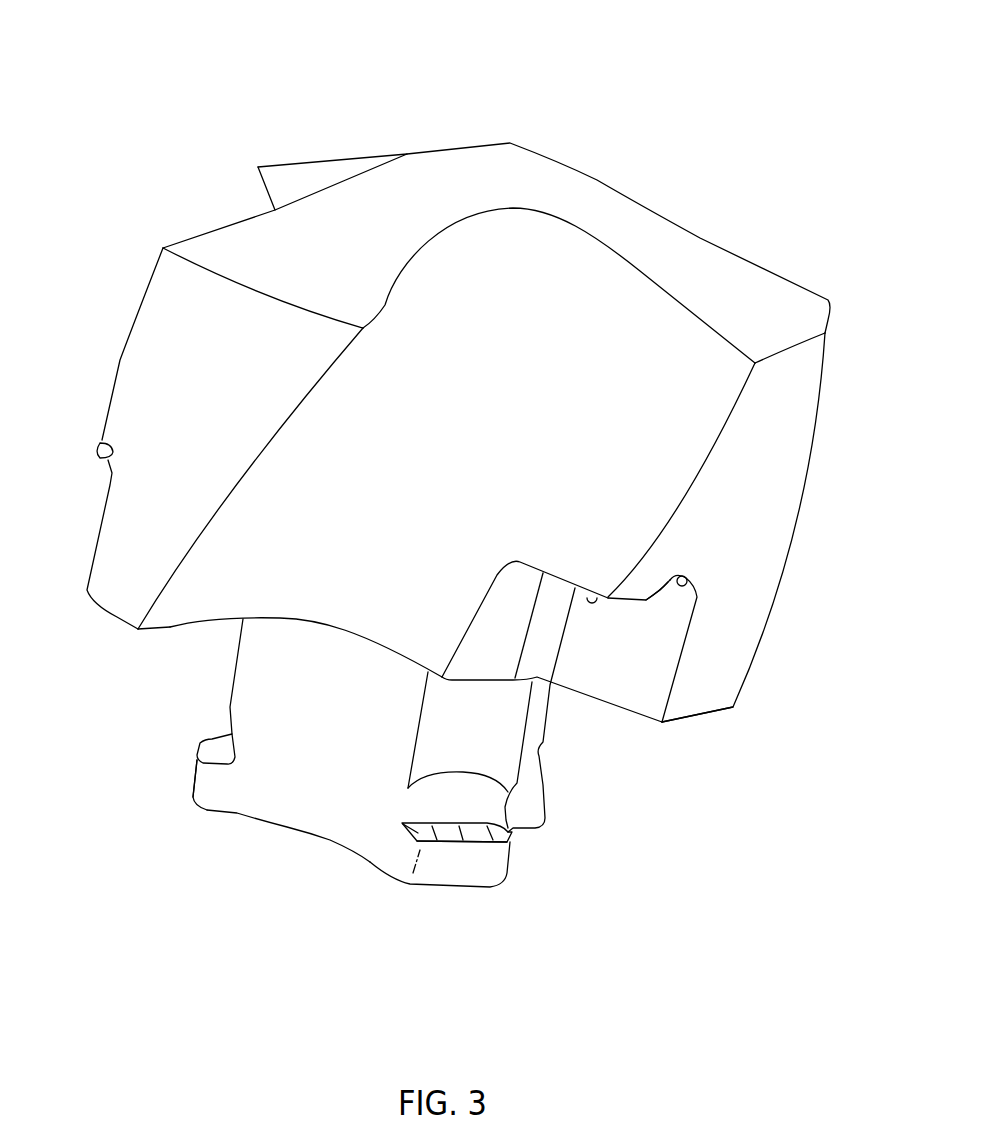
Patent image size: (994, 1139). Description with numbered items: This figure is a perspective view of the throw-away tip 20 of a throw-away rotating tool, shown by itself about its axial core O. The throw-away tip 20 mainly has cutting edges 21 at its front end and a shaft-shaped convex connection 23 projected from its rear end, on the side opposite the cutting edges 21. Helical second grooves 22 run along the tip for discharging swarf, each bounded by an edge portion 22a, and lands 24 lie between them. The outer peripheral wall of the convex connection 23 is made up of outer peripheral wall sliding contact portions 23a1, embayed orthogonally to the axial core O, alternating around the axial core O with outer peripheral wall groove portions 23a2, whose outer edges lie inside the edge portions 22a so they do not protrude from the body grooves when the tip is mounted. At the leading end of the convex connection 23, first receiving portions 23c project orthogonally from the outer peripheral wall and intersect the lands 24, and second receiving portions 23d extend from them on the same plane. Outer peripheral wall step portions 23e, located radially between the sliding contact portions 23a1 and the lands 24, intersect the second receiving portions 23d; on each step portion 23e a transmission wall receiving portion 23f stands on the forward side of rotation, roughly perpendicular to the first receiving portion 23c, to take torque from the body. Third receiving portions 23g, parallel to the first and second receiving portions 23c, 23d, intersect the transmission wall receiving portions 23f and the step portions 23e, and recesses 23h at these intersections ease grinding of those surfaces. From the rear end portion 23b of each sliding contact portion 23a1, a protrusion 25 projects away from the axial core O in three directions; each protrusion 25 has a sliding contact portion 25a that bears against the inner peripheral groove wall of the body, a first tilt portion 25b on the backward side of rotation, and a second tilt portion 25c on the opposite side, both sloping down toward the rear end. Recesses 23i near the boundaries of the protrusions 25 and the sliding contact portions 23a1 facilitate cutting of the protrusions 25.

The throw-away tip 20 is at (717, 85).
The cutting edges 21 is at (428, 242).
The second groove 22 is at (310, 410).
The edge portion 22a is at (178, 631).
The shaft-shaped convex connection 23 is at (240, 935).
The outer peripheral wall sliding contact portion 23a1 is at (502, 762).
The outer peripheral wall groove portion 23a2 is at (234, 793).
The rear end portion 23b is at (288, 828).
The first receiving portion 23c is at (690, 723).
The second receiving portion 23d is at (475, 683).
The outer peripheral wall step portion 23e is at (494, 605).
The transmission wall receiving portion 23f is at (613, 693).
The third receiving portion 23g is at (593, 588).
The recess 23h is at (690, 579).
The recess 23i is at (408, 800).
The land 24 is at (152, 297).
The protrusion 25 is at (487, 873).
The sliding contact portion 25a is at (458, 835).
The first tilt portion 25b is at (507, 840).
The second tilt portion 25c is at (403, 826).
The axial core O is at (510, 143).